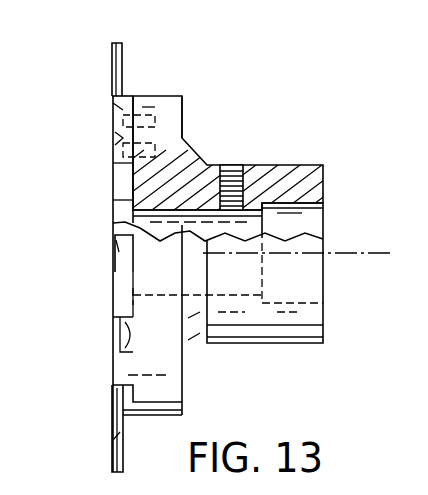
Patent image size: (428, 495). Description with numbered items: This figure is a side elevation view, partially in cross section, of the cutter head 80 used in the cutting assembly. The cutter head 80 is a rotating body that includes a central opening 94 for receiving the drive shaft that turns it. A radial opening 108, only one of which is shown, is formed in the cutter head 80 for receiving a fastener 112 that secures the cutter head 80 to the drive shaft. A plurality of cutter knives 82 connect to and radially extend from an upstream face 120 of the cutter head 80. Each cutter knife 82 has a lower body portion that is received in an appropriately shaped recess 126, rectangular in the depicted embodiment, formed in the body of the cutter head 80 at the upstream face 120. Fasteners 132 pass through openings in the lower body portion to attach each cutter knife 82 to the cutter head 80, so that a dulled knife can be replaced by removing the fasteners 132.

The cutter head 80 is at (291, 145).
The cutter knives 82 is at (102, 62).
The central opening 94 is at (305, 208).
The radial openings 108 is at (232, 167).
The fasteners 112 is at (243, 167).
The upstream face 120 is at (110, 300).
The recesses 126 is at (113, 163).
The fasteners 132 is at (152, 110).